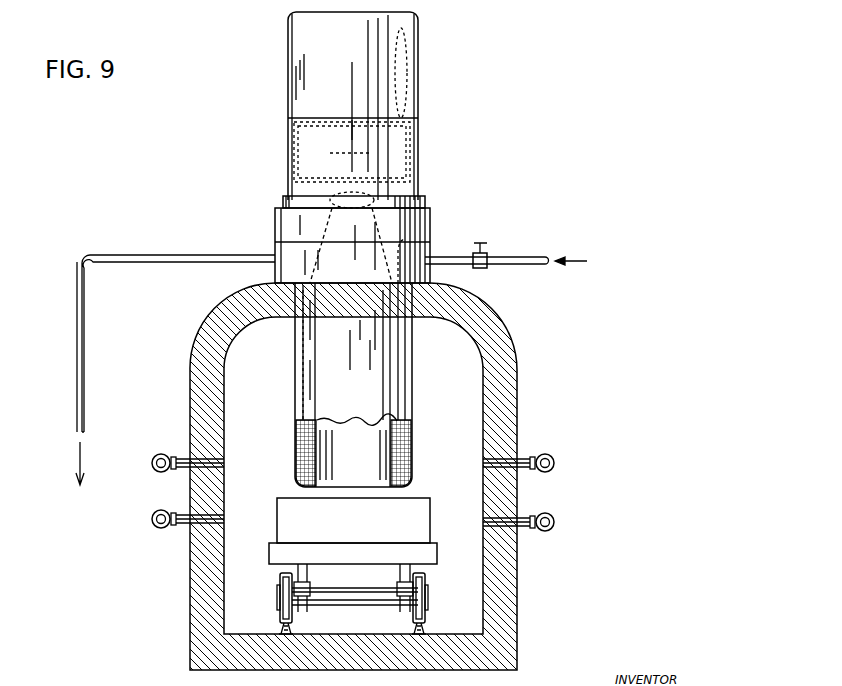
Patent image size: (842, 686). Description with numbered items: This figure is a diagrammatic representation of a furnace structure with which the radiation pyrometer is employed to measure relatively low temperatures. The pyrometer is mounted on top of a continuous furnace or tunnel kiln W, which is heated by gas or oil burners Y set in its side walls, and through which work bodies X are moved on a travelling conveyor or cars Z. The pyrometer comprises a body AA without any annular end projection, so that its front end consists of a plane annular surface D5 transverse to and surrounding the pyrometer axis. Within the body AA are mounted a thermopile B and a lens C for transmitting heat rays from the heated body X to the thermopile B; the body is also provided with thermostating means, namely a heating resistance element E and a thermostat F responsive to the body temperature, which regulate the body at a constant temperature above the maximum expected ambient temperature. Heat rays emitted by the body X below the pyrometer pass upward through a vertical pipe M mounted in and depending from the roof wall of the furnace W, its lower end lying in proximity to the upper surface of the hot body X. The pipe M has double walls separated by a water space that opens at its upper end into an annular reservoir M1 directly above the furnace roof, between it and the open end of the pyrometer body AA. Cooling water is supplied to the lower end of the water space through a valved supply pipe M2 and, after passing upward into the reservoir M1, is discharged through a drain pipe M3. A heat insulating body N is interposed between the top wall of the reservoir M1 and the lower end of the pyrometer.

The pyrometer body AA is at (297, 42).
The thermostat F is at (407, 80).
The heating resistance element E is at (410, 146).
The thermopile B is at (340, 151).
The lens C is at (345, 190).
The annular surface D5 is at (430, 208).
The heat insulating body N is at (275, 226).
The annular reservoir M1 is at (432, 246).
The vertical pipe M is at (303, 375).
The valved supply pipe M2 is at (408, 448).
The drain pipe M3 is at (78, 325).
The continuous furnace or tunnel kiln W is at (507, 402).
The gas or oil burners Y is at (224, 465).
The work bodies X is at (288, 518).
The travelling conveyor or cars Z is at (282, 552).